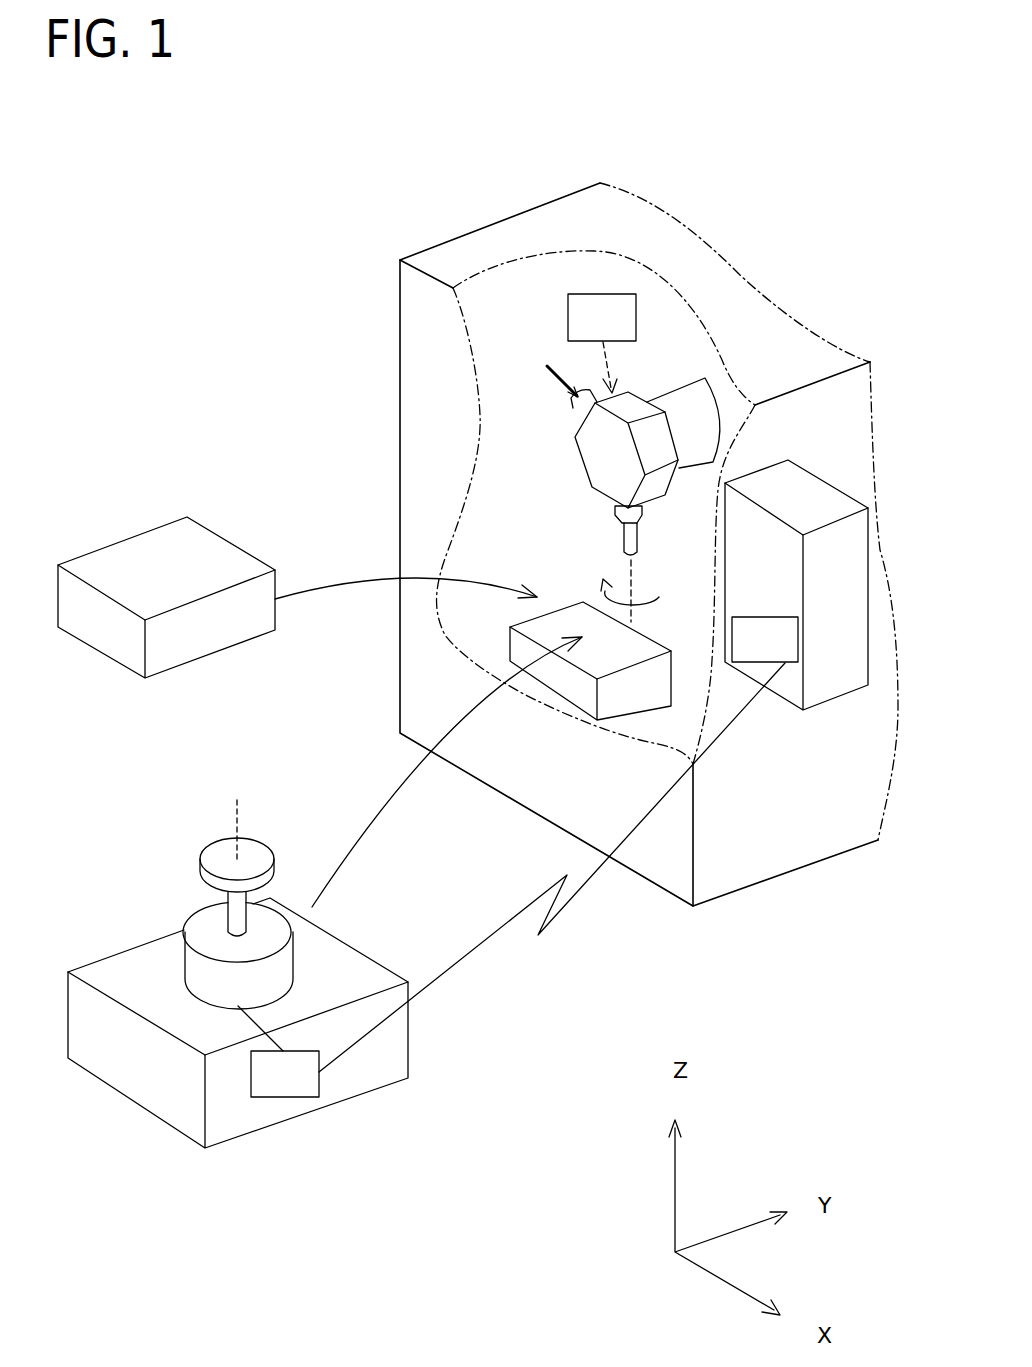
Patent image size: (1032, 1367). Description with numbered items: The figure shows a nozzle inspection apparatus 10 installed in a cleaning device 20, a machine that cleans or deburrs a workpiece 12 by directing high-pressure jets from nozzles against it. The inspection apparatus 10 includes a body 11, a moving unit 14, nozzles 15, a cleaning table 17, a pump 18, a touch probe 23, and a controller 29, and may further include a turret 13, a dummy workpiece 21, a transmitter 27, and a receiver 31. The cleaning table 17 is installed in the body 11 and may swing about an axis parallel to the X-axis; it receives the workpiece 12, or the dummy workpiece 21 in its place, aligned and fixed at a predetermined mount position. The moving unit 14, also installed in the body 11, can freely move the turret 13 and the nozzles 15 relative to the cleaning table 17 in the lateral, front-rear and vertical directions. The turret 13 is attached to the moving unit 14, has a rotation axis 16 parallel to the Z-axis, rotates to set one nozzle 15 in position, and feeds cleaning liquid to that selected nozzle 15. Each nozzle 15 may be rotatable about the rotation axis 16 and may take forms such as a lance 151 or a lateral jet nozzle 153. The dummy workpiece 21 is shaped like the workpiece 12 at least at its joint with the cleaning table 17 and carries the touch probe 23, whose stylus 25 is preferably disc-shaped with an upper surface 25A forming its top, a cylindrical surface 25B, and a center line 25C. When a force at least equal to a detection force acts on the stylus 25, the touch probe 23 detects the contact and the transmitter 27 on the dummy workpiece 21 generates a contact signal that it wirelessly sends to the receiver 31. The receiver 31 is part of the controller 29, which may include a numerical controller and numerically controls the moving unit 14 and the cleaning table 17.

The inspection apparatus 10 is at (894, 189).
The body 11 is at (398, 458).
The workpiece 12 is at (222, 540).
The turret 13 is at (576, 423).
The moving unit 14 is at (715, 393).
The nozzles 15 is at (559, 441).
The lance 151 is at (556, 366).
The lateral jet nozzle 153 is at (621, 527).
The rotation axis 16 is at (632, 576).
The cleaning table 17 is at (565, 604).
The pump 18 is at (568, 313).
The cleaning device 20 is at (398, 374).
The dummy workpiece 21 is at (131, 1098).
The touch probe 23 is at (185, 922).
The stylus 25 is at (174, 865).
The upper surface 25A is at (210, 852).
The cylindrical surface 25B is at (200, 871).
The center line 25C is at (237, 813).
The transmitter 27 is at (296, 1098).
The controller 29 is at (823, 478).
The receiver 31 is at (768, 614).